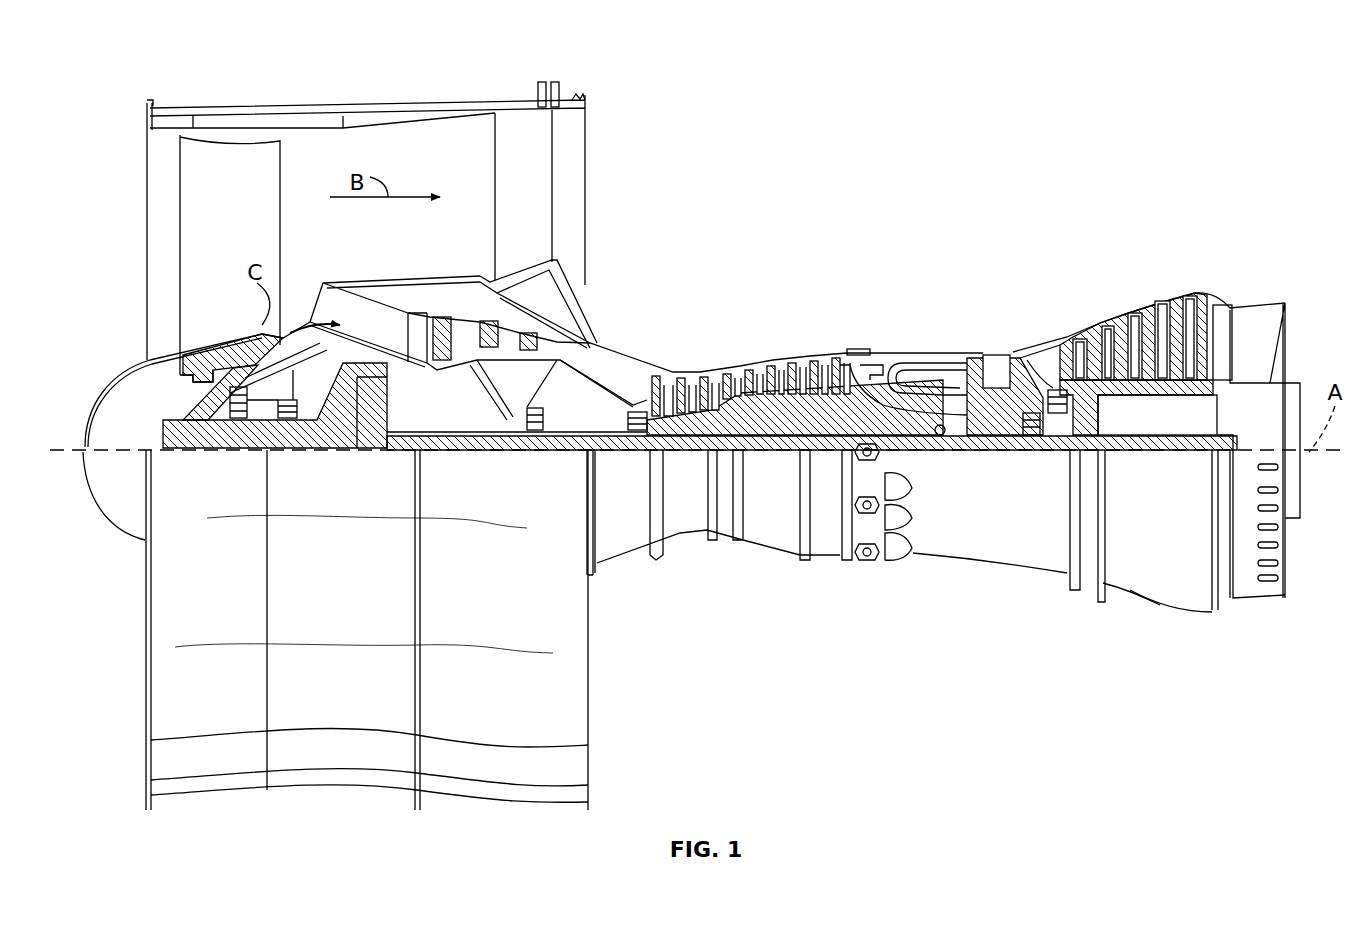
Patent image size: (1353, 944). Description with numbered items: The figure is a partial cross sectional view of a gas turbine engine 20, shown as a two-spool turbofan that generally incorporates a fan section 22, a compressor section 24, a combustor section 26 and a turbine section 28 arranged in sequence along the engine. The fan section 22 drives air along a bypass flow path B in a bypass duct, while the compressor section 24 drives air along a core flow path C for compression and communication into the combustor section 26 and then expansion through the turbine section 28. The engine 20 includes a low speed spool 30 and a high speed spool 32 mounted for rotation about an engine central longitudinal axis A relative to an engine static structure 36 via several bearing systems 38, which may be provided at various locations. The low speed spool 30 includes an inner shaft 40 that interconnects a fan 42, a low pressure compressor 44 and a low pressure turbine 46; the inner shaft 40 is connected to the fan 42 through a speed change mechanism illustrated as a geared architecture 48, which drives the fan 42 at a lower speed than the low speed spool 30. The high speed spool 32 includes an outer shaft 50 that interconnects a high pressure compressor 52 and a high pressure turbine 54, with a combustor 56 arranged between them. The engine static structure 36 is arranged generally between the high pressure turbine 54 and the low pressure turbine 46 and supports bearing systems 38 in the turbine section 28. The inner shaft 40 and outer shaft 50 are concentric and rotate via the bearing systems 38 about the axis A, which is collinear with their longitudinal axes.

The gas turbine engine 20 is at (1186, 184).
The fan section 22 is at (227, 66).
The compressor section 24 is at (640, 327).
The combustor section 26 is at (970, 300).
The turbine section 28 is at (1077, 300).
The low speed spool 30 is at (790, 460).
The high speed spool 32 is at (822, 408).
The engine static structure 36 is at (832, 566).
The bearing systems 38 is at (247, 410).
The inner shaft 40 is at (602, 455).
The fan 42 is at (240, 242).
The low pressure compressor 44 is at (508, 330).
The low pressure turbine 46 is at (1148, 318).
The geared architecture 48 is at (380, 430).
The outer shaft 50 is at (944, 436).
The high pressure compressor 52 is at (740, 417).
The high pressure turbine 54 is at (985, 352).
The combustor 56 is at (920, 377).